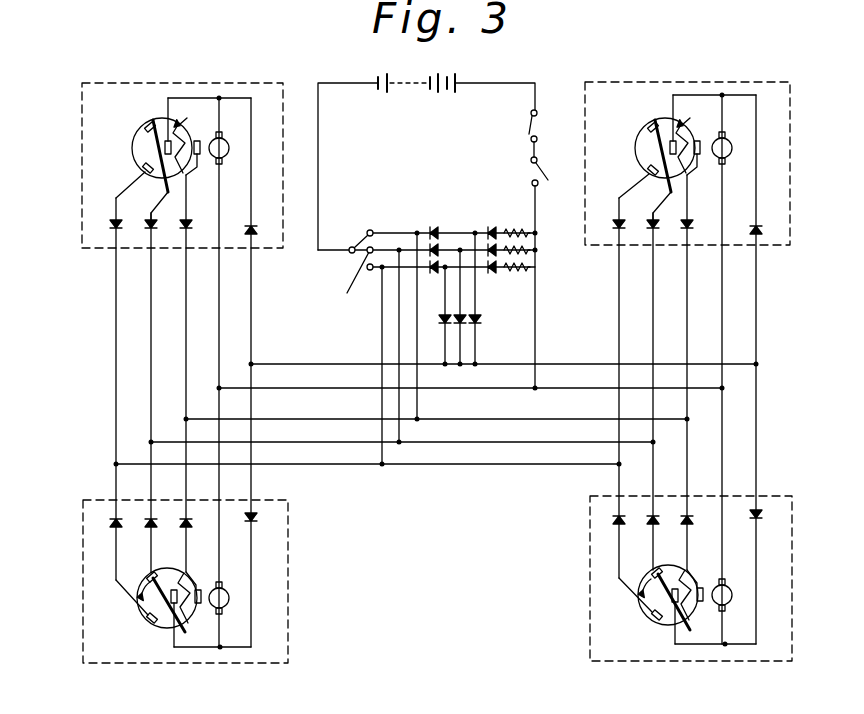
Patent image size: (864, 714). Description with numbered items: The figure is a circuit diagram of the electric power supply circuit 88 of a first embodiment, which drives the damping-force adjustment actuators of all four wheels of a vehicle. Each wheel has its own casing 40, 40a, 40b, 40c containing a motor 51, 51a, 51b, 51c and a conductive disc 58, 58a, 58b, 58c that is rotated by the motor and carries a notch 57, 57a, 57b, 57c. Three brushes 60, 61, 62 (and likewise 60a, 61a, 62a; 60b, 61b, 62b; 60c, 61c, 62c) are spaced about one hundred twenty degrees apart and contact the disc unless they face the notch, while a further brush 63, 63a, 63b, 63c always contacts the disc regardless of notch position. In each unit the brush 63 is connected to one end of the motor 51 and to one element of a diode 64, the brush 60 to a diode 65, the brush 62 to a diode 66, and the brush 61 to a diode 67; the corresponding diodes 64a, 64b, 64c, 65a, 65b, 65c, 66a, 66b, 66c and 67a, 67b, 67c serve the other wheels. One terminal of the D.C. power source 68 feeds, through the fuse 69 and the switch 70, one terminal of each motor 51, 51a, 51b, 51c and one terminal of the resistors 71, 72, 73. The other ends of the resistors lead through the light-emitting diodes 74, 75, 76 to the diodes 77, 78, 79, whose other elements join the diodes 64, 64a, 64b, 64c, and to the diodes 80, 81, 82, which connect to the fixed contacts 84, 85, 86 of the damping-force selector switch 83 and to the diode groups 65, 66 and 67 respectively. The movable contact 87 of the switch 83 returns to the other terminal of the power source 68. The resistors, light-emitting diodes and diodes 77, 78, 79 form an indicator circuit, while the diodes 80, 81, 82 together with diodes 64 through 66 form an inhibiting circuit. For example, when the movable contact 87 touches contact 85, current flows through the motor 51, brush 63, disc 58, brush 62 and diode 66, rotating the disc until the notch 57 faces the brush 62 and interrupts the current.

The casing 40 is at (792, 186).
The casing 40a is at (792, 632).
The casing 40b is at (176, 70).
The casing 40c is at (290, 628).
The motor 51 is at (731, 142).
The motor 51a is at (733, 598).
The motor 51b is at (225, 138).
The motor 51c is at (230, 600).
The notch 57 is at (676, 136).
The notch 57a is at (702, 584).
The notch 57b is at (192, 125).
The notch 57c is at (200, 585).
The conductive disc 58 is at (636, 146).
The conductive disc 58a is at (673, 625).
The conductive disc 58b is at (133, 148).
The conductive disc 58c is at (190, 635).
The brush 60 is at (699, 163).
The brush 60a is at (705, 578).
The brush 60b is at (199, 163).
The brush 60c is at (200, 615).
The brush 61 is at (648, 172).
The brush 61a is at (653, 619).
The brush 61b is at (145, 170).
The brush 61c is at (148, 622).
The brush 62 is at (649, 123).
The brush 62a is at (652, 572).
The brush 62b is at (146, 124).
The brush 62c is at (146, 574).
The brush 63 is at (655, 118).
The brush 63a is at (692, 632).
The brush 63b is at (155, 118).
The brush 63c is at (165, 632).
The diode 64 is at (761, 227).
The diode 64a is at (762, 520).
The diode 64b is at (257, 229).
The diode 64c is at (256, 522).
The diode 65 is at (695, 232).
The diode 65a is at (692, 522).
The diode 65b is at (190, 231).
The diode 65c is at (190, 525).
The diode 66 is at (647, 229).
The diode 66a is at (648, 521).
The diode 66b is at (145, 230).
The diode 66c is at (146, 524).
The diode 67 is at (612, 229).
The diode 67a is at (612, 520).
The diode 67b is at (112, 224).
The diode 67c is at (110, 522).
The D.C. power source 68 is at (440, 80).
The fuse 69 is at (540, 120).
The switch 70 is at (542, 172).
The resistor 71 is at (522, 228).
The resistor 72 is at (530, 233).
The resistor 73 is at (530, 267).
The light-emitting diode 74 is at (490, 226).
The light-emitting diode 75 is at (493, 246).
The light-emitting diode 76 is at (492, 272).
The diode 77 is at (482, 322).
The diode 78 is at (463, 328).
The diode 79 is at (446, 326).
The diode 80 is at (428, 230).
The diode 81 is at (434, 248).
The diode 82 is at (433, 271).
The damping-force selector switch 83 is at (350, 242).
The fixed contact 84 is at (378, 215).
The fixed contact 85 is at (357, 290).
The fixed contact 86 is at (372, 271).
The movable contact 87 is at (350, 256).
The electric power supply circuit 88 is at (447, 525).